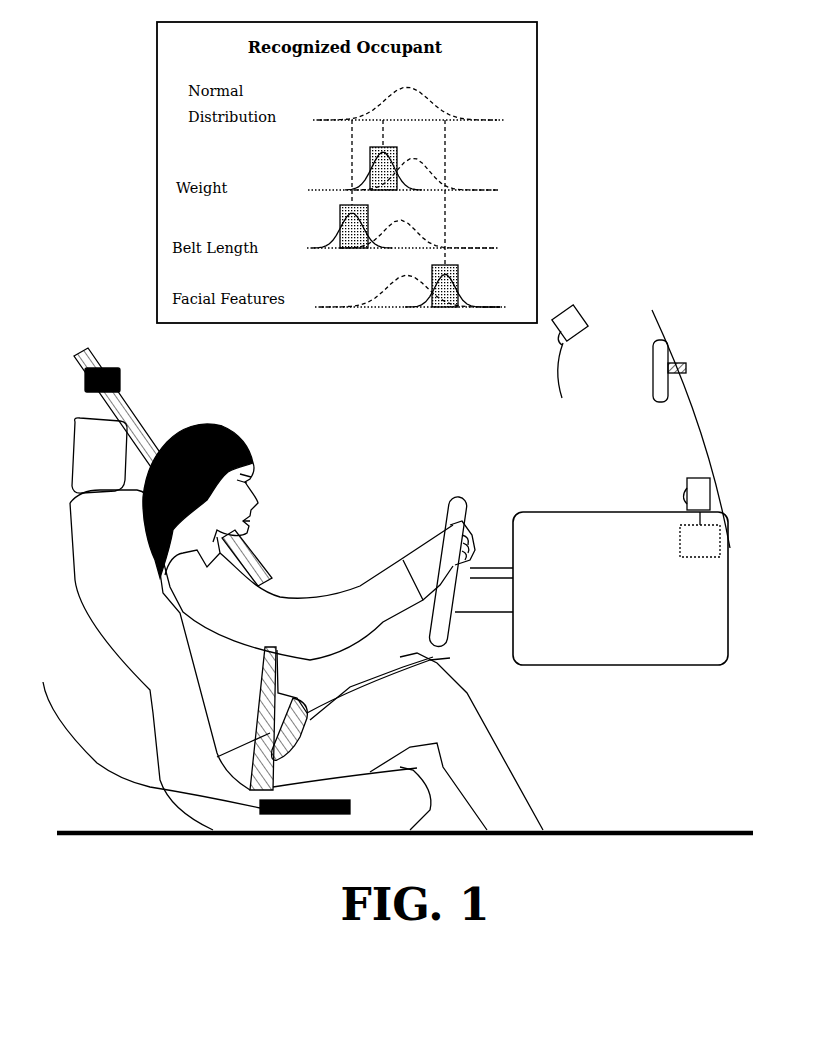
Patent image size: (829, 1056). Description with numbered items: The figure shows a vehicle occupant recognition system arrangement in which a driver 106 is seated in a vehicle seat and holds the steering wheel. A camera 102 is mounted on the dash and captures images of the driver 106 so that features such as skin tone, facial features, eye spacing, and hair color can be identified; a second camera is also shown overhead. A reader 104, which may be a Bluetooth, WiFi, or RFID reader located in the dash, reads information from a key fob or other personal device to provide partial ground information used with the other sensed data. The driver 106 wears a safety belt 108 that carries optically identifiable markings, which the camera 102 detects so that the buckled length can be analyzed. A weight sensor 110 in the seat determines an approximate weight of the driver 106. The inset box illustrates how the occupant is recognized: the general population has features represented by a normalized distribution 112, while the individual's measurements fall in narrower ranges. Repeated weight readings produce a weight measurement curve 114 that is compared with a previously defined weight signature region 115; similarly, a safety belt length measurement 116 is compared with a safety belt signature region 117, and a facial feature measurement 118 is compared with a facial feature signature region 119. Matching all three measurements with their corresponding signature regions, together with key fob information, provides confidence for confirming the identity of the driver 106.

The camera 102 is at (697, 487).
The reader 104 is at (680, 552).
The driver 106 is at (258, 462).
The safety belt 108 is at (143, 408).
The weight sensor 110 is at (225, 624).
The normalized distribution 112 is at (413, 88).
The weight measurement curve 114 is at (365, 168).
The weight signature region 115 is at (396, 164).
The safety belt length measurement 116 is at (337, 234).
The safety belt signature region 117 is at (366, 229).
The facial feature measurement 118 is at (430, 296).
The facial feature signature region 119 is at (460, 283).